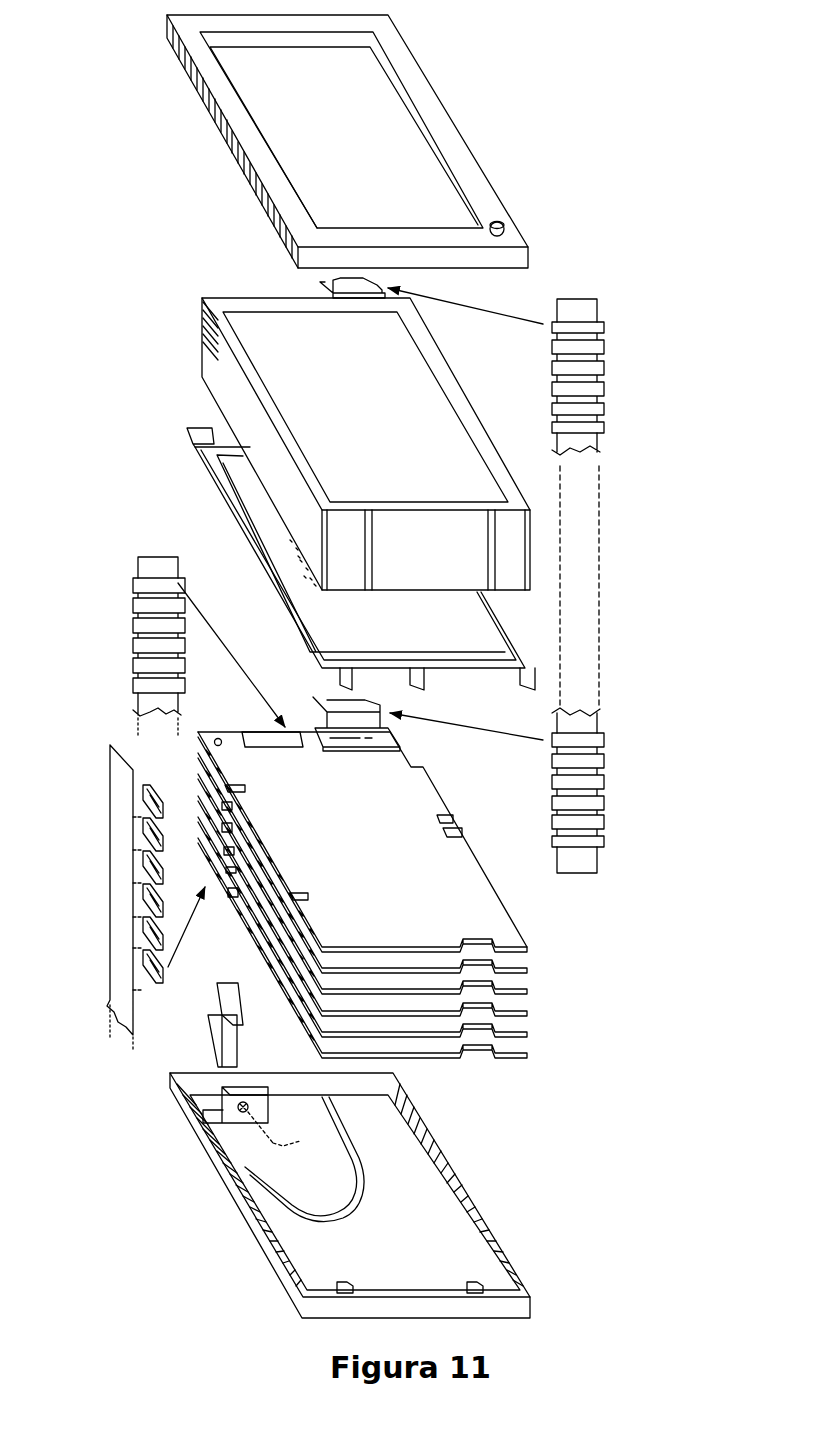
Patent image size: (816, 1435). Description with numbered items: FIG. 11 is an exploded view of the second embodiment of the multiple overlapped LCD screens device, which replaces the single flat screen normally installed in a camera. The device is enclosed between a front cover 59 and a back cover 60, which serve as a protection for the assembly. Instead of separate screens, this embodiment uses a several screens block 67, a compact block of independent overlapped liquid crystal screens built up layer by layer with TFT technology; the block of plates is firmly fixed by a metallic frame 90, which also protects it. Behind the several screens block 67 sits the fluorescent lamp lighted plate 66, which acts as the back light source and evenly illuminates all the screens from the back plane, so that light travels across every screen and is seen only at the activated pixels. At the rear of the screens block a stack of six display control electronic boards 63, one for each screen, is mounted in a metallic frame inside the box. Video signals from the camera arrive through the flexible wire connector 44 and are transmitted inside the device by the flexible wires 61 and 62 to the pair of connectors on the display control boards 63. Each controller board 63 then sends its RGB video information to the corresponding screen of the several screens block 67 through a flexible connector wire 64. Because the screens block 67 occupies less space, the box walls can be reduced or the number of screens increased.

The front cover 59 is at (530, 253).
The metallic frame 90 is at (326, 434).
The several screens block 67 is at (302, 393).
The fluorescent lamp lighted plate 66 is at (222, 490).
The flexible wire 62 is at (130, 627).
The flexible connector wire 64 is at (594, 850).
The display control electronic boards 63 is at (518, 1045).
The flexible wire 61 is at (110, 802).
The flexible wire connector 44 is at (213, 1045).
The back cover 60 is at (452, 1168).